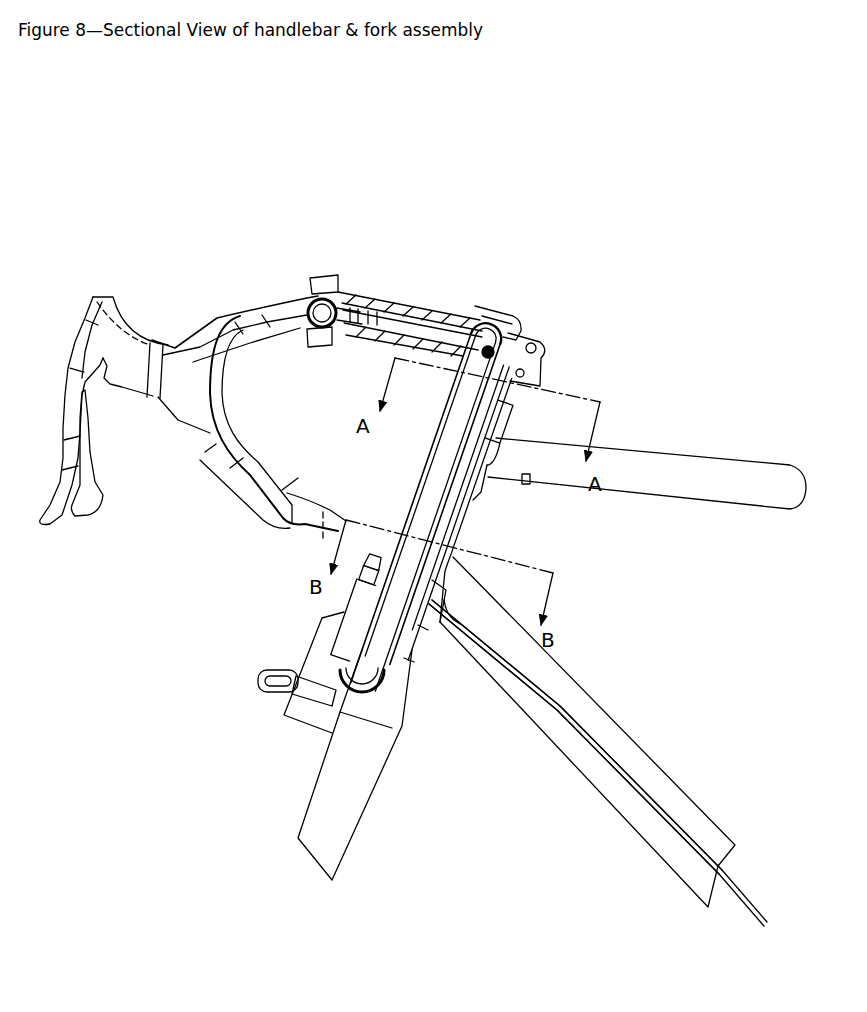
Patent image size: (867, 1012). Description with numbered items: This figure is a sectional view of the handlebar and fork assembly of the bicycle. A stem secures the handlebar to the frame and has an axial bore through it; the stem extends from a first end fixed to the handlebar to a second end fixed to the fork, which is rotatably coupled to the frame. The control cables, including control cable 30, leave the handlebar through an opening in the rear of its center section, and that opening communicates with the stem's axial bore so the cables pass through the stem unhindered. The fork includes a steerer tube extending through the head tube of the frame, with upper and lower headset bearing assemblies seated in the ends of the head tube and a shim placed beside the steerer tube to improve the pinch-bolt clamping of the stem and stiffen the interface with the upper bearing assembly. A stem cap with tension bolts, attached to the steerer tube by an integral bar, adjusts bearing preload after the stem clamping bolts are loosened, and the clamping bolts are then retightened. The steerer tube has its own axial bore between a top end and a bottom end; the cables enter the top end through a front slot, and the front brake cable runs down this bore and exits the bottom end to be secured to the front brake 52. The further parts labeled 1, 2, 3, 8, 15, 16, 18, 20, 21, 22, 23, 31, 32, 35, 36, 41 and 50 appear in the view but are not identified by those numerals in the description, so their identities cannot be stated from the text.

The handlebar 1 is at (215, 487).
The brake hood 2 is at (100, 378).
The brake lever 3 is at (92, 292).
The stem 8 is at (393, 296).
The pivot point 15 is at (485, 347).
The steerer tube 16 is at (418, 485).
The mounting bracket 18 is at (523, 341).
The fork crown 20 is at (386, 683).
The cable 21 is at (574, 711).
The cable housing 22 is at (577, 735).
The cable liner 23 is at (574, 739).
The control cable 30 is at (394, 520).
The top tube 31 is at (754, 455).
The down tube 32 is at (691, 788).
The lower bearing 35 is at (440, 596).
The spacer 36 is at (492, 459).
The clamp bracket 41 is at (507, 421).
The top cap 50 is at (516, 309).
The front brake 52 is at (541, 355).